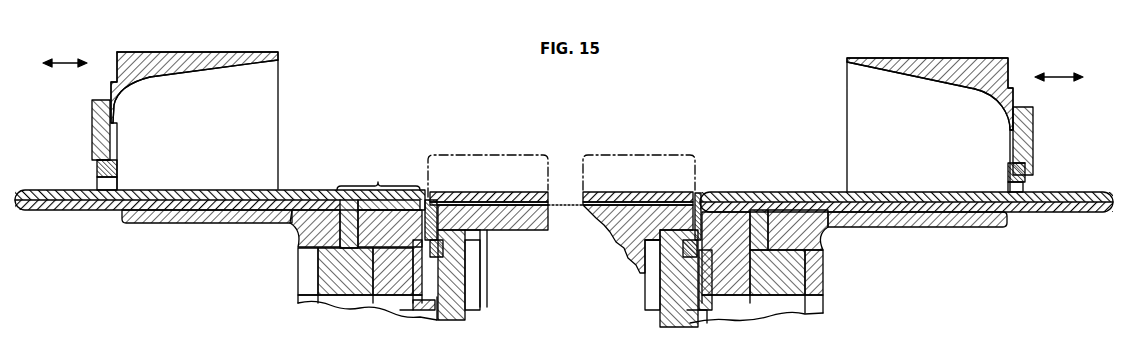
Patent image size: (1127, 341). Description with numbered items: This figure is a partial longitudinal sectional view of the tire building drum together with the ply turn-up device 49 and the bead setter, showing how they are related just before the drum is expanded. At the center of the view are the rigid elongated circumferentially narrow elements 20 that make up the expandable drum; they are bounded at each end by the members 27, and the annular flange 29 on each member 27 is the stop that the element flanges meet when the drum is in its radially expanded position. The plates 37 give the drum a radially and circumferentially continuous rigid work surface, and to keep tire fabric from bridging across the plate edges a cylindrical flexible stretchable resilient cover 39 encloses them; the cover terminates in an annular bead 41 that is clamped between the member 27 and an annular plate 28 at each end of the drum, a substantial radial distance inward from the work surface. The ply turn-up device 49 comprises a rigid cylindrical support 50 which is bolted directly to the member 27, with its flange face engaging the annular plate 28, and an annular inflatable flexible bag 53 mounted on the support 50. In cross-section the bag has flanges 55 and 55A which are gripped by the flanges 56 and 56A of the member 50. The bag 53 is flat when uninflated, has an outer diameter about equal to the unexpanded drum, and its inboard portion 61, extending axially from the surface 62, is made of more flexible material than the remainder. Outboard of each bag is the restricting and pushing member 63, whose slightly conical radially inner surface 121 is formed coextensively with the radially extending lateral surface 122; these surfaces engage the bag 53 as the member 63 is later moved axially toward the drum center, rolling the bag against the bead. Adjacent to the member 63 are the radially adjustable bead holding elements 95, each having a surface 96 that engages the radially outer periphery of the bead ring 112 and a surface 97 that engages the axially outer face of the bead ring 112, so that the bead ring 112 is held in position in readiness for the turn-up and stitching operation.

The restricting and pushing member 63 is at (230, 55).
The radially inner surface 121 is at (204, 73).
The radially extending lateral surface 122 is at (128, 98).
The bead holding element 95 is at (92, 110).
The surface 96 is at (97, 169).
The surface 97 is at (108, 158).
The bead ring 112 is at (118, 168).
The annular inflatable flexible bag 53 is at (207, 191).
The ply turn-up device 49 is at (263, 166).
The rigid cylindrical support 50 is at (181, 224).
The flange 56 is at (327, 237).
The flange 55 is at (325, 256).
The inboard portion 61 is at (379, 204).
The surface 62 is at (432, 190).
The cover 39 is at (522, 192).
The plate 37 is at (580, 207).
The rigid elongated circumferentially narrow element 20 is at (490, 225).
The annular flange 29 is at (470, 231).
The annular bead 41 is at (443, 255).
The member 27 is at (458, 297).
The annular plate 28 is at (412, 311).
The flange 56A is at (762, 230).
The flange 55A is at (803, 237).